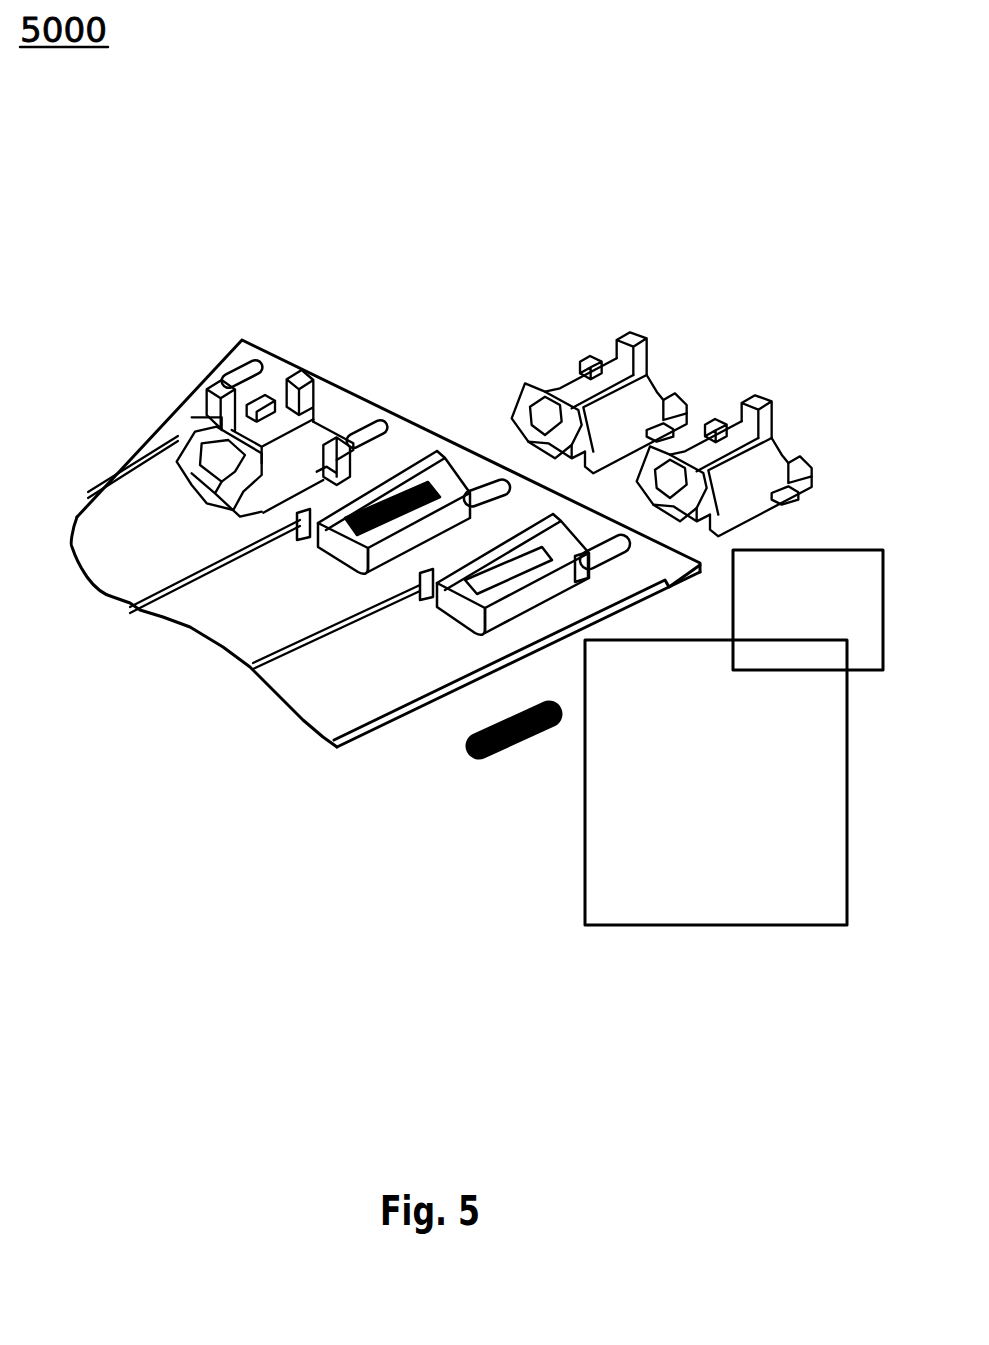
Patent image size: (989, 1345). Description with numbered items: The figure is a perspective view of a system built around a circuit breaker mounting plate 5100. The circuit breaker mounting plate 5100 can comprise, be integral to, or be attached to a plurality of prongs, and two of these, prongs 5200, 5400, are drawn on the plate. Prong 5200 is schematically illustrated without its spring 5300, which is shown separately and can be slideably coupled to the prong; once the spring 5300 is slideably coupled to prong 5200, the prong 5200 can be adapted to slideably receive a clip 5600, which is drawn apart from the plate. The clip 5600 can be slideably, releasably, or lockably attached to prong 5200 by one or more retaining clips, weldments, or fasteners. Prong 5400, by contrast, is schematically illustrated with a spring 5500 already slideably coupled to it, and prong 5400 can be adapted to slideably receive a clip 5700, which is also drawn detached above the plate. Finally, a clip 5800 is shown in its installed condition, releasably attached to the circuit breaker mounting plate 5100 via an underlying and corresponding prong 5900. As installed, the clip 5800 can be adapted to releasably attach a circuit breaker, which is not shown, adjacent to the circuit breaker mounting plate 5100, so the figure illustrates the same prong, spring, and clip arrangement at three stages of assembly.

The circuit breaker mounting plate 5100 is at (87, 537).
The prong 5200 is at (587, 558).
The spring 5300 is at (550, 730).
The prong 5400 is at (462, 494).
The spring 5500 is at (396, 462).
The clip 5600 is at (755, 388).
The clip 5700 is at (632, 328).
The clip 5800 is at (303, 373).
The prong 5900 is at (215, 506).